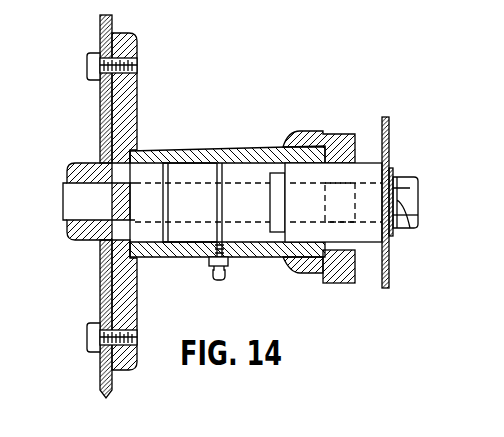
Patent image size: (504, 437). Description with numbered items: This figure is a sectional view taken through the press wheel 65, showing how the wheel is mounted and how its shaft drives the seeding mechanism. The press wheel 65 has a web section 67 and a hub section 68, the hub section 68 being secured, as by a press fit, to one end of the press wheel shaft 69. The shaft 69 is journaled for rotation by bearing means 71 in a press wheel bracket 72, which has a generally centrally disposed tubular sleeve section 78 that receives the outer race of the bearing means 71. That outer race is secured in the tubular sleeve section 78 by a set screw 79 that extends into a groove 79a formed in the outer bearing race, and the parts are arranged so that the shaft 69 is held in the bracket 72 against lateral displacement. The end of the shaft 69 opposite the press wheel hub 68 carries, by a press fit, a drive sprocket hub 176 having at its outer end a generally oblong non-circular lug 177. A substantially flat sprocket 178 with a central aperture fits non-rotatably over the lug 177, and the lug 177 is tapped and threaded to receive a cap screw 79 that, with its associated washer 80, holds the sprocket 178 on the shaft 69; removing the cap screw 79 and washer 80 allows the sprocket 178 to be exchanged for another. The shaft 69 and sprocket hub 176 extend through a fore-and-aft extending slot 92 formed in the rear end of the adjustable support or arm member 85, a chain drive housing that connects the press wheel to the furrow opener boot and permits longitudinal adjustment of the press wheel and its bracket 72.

The press wheel 65 is at (80, 66).
The web section 67 is at (104, 32).
The hub section 68 is at (130, 108).
The press wheel shaft 69 is at (78, 208).
The bearing means 71 is at (240, 233).
The press wheel bracket 72 is at (278, 148).
The tubular sleeve section 78 is at (200, 155).
The set screw / cap screw 79 is at (212, 281).
The groove 79a is at (226, 200).
The washer 80 is at (392, 178).
The adjustable support or arm member 85 is at (336, 284).
The fore-and-aft extending slot 92 is at (330, 250).
The drive sprocket hub 176 is at (367, 163).
The lug 177 is at (389, 206).
The sprocket 178 is at (391, 250).